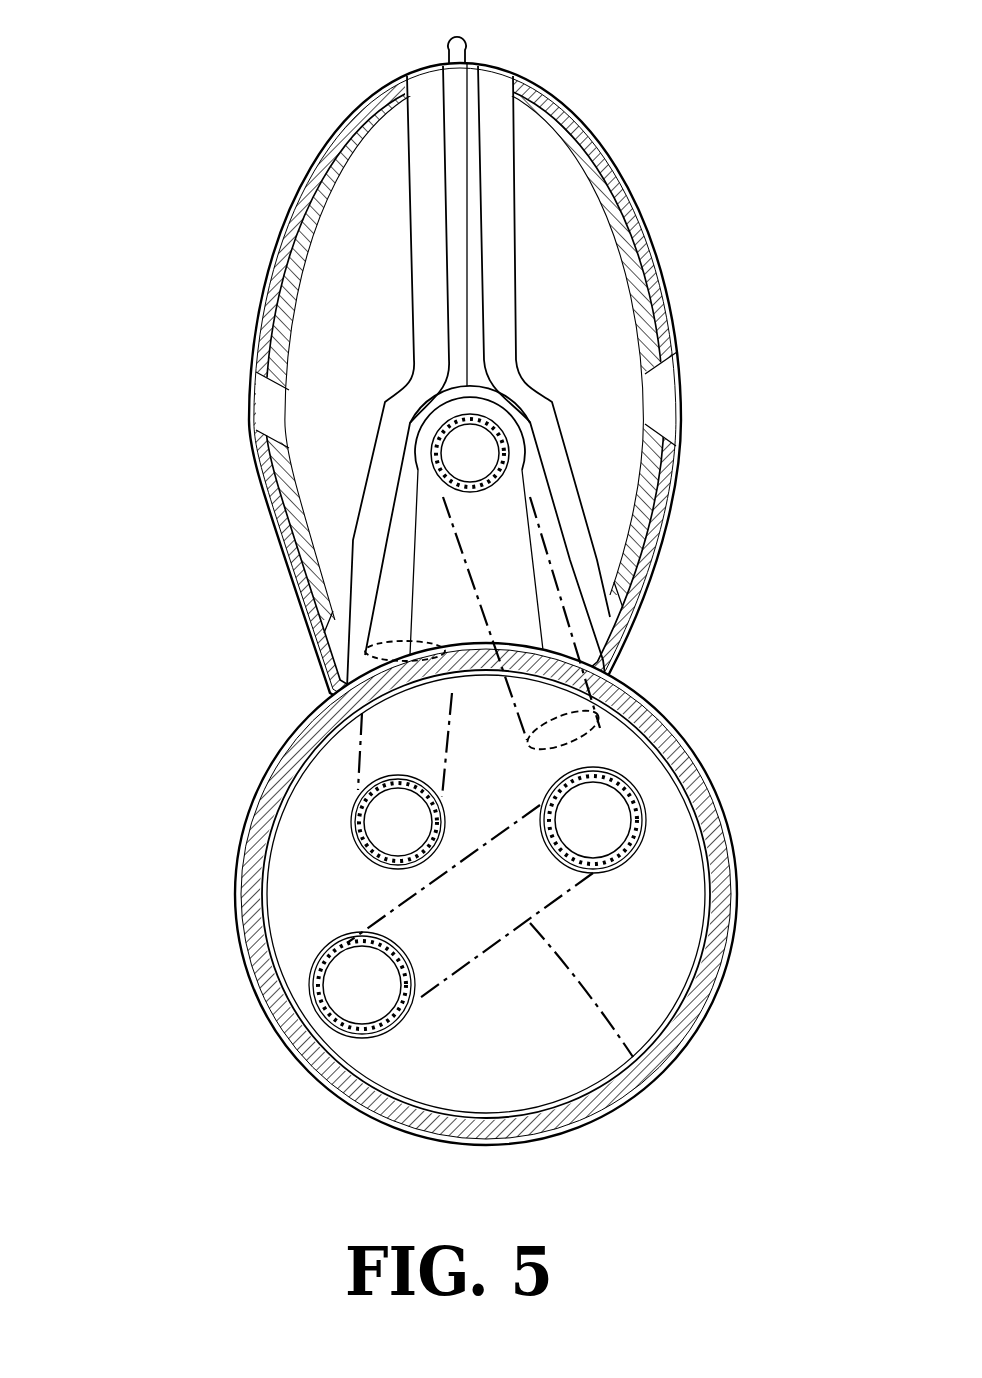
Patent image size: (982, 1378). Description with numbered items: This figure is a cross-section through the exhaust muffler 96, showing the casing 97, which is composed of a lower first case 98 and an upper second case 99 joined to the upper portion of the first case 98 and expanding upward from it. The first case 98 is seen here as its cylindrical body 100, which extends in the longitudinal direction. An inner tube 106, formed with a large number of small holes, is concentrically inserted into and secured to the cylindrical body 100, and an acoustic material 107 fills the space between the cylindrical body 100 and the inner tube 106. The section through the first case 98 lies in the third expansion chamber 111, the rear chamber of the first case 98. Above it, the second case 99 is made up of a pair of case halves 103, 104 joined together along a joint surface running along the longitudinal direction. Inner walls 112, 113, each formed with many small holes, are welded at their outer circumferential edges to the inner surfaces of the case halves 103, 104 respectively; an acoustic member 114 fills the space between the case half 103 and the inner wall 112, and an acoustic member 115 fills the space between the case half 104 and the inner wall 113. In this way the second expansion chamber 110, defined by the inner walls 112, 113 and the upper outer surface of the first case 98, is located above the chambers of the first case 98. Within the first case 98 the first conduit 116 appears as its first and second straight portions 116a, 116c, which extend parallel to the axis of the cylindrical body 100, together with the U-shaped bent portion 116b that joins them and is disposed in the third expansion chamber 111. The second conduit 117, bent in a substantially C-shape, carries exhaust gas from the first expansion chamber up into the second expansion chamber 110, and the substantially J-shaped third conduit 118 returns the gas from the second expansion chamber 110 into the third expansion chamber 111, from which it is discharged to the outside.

The exhaust muffler 96 is at (270, 1028).
The casing 97 is at (99, 522).
The first case 98 is at (285, 728).
The second case 99 is at (268, 515).
The cylindrical body 100 is at (725, 806).
The case half 103 is at (680, 340).
The case half 104 is at (253, 324).
The inner tube 106 is at (741, 875).
The acoustic material 107 is at (725, 983).
The second expansion chamber 110 is at (605, 373).
The third expansion chamber 111 is at (532, 1040).
The inner wall 112 is at (603, 210).
The inner wall 113 is at (313, 237).
The acoustic member 114 is at (650, 239).
The acoustic member 115 is at (288, 215).
The first conduit 116 is at (636, 782).
The first straight portion 116a is at (357, 1037).
The bent portion 116b is at (668, 1072).
The second straight portion 116c is at (643, 827).
The second conduit 117 is at (360, 853).
The third conduit 118 is at (506, 432).